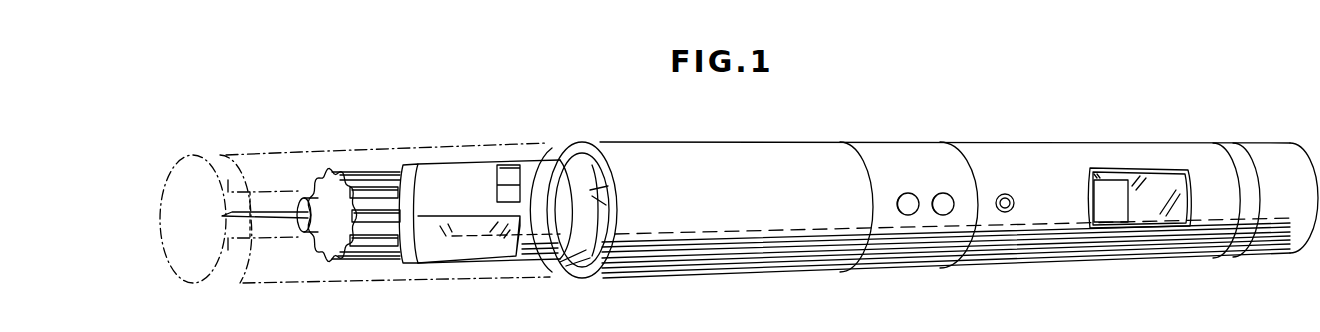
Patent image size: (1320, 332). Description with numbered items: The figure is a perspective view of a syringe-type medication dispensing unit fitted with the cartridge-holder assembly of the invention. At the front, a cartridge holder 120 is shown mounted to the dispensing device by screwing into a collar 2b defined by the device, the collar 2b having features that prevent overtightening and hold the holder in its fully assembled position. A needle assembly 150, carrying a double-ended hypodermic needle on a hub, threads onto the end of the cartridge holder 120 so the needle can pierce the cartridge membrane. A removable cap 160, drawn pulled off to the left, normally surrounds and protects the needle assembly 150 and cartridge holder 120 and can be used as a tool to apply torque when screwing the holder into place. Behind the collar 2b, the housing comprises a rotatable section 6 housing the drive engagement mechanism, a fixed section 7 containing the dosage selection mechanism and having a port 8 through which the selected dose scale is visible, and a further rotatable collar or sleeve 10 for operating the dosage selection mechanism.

The collar 2b is at (645, 158).
The rotatable section 6 is at (896, 152).
The fixed section 7 is at (1020, 152).
The port 8 is at (1115, 178).
The rotatable collar or sleeve 10 is at (1265, 155).
The cartridge holder 120 is at (453, 167).
The needle assembly 150 is at (355, 174).
The removable cap 160 is at (380, 285).